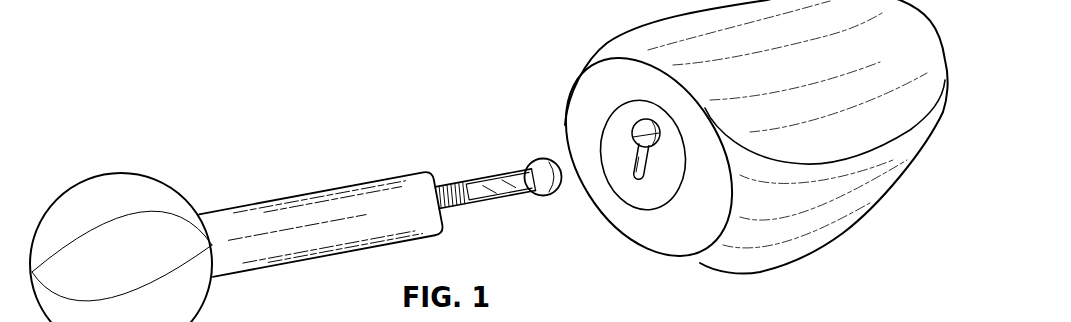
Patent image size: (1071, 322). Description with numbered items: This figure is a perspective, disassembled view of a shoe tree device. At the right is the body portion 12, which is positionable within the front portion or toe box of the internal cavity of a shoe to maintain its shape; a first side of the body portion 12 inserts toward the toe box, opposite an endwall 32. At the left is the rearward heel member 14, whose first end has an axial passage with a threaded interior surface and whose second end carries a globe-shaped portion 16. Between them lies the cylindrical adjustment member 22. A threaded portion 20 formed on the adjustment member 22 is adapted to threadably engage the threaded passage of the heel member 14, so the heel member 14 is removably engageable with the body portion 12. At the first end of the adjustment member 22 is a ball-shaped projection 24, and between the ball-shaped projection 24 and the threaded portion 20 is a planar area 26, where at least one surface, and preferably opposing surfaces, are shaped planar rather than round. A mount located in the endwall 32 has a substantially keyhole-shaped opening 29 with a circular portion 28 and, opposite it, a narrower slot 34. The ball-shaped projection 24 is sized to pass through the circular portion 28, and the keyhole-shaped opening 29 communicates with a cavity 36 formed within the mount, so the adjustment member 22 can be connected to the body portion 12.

The body portion 12 is at (763, 238).
The heel member 14 is at (203, 214).
The globe-shaped portion 16 is at (102, 195).
The threaded portion 20 is at (440, 182).
The adjustment member 22 is at (530, 170).
The ball-shaped projection 24 is at (546, 159).
The planar area 26 is at (504, 192).
The circular portion 28 is at (632, 135).
The keyhole-shaped opening 29 is at (657, 128).
The endwall 32 is at (681, 263).
The slot 34 is at (636, 172).
The cavity 36 is at (829, 318).